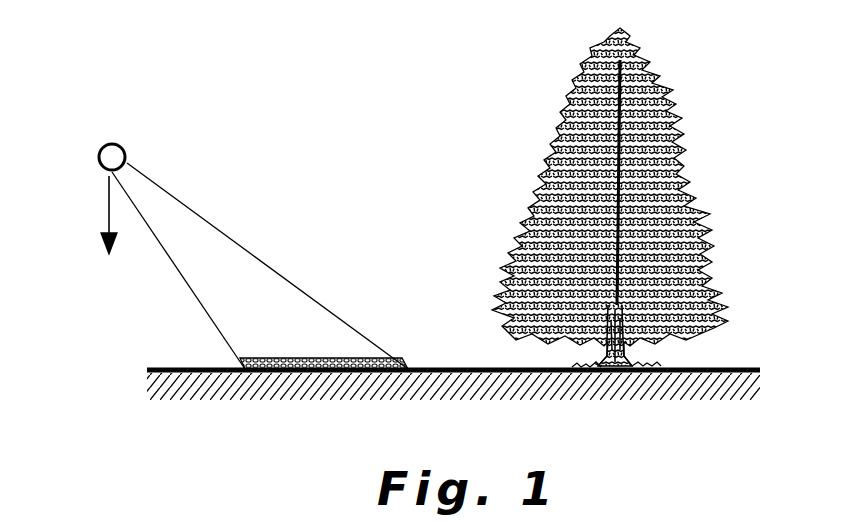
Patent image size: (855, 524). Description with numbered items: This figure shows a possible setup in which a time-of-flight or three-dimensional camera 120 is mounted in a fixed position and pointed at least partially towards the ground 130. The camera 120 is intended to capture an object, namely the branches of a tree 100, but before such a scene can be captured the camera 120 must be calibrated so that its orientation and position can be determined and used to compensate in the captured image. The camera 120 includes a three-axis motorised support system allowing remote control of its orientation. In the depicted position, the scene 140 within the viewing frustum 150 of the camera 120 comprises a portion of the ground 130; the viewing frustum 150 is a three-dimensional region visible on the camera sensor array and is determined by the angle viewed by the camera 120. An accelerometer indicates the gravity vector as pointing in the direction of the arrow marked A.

The tree 100 is at (693, 94).
The camera 120 is at (105, 150).
The ground 130 is at (182, 368).
The scene 140 is at (337, 362).
The viewing frustum 150 is at (262, 295).